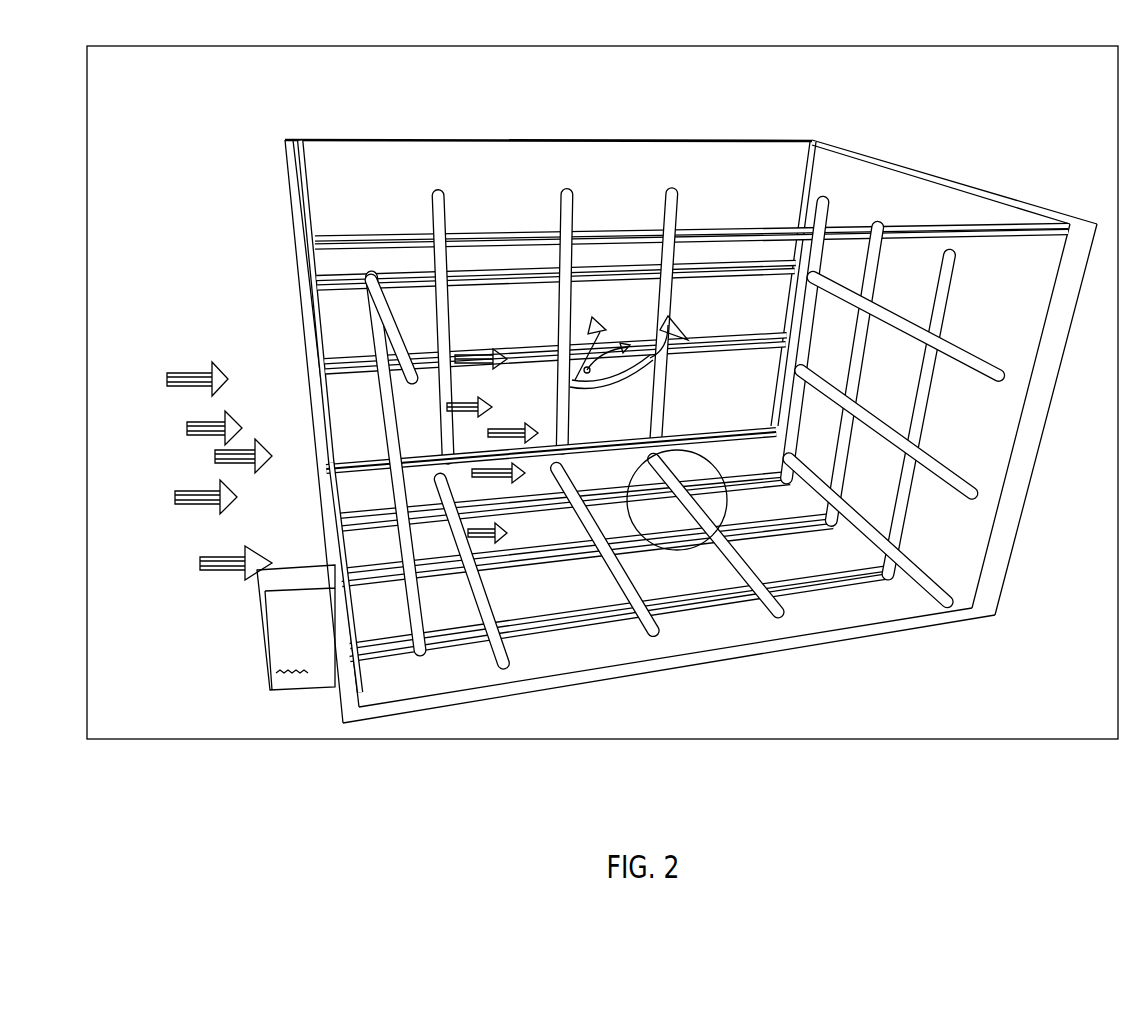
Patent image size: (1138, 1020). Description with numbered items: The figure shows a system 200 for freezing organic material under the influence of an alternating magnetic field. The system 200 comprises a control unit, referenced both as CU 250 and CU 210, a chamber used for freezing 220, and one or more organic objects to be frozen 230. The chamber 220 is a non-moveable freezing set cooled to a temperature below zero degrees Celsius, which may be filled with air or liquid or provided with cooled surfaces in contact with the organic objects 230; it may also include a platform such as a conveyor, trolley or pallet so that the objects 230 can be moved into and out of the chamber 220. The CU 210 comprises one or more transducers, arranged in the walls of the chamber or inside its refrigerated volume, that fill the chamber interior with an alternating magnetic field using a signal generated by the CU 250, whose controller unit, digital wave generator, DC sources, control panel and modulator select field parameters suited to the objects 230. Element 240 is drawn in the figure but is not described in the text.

The system 200 is at (691, 432).
The CU 210 is at (398, 463).
The chamber used for freezing 220 is at (930, 402).
The organic objects to be frozen 230 is at (648, 421).
The floor grid rails 240 is at (610, 575).
The CU 250 is at (352, 519).